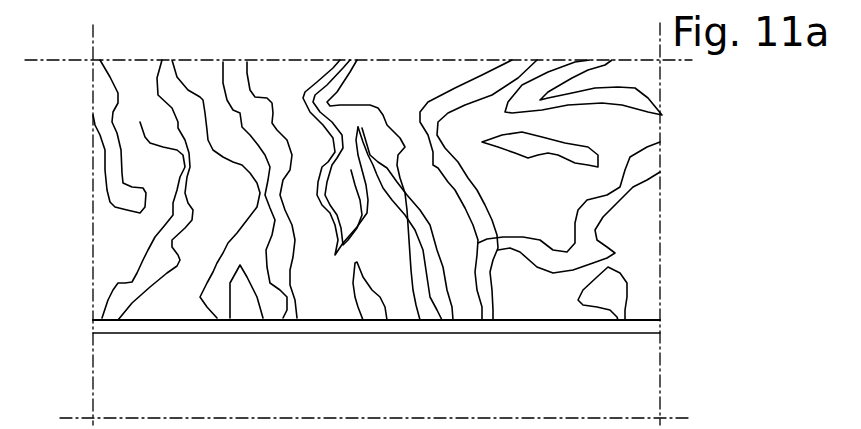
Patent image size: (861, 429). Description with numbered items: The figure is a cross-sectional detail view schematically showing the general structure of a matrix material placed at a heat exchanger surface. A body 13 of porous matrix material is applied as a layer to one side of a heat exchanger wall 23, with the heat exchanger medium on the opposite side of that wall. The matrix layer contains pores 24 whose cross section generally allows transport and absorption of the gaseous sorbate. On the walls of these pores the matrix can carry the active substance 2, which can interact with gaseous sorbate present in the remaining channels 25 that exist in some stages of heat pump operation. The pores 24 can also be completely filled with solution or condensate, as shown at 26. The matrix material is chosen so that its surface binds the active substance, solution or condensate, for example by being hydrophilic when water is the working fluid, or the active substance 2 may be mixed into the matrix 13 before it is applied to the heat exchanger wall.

The active substance 2 is at (325, 72).
The body of porous matrix material 13 is at (107, 248).
The heat exchanger wall 23 is at (172, 327).
The pores 24 is at (622, 195).
The remaining channels 25 is at (347, 117).
The completely filled pore 26 is at (237, 80).